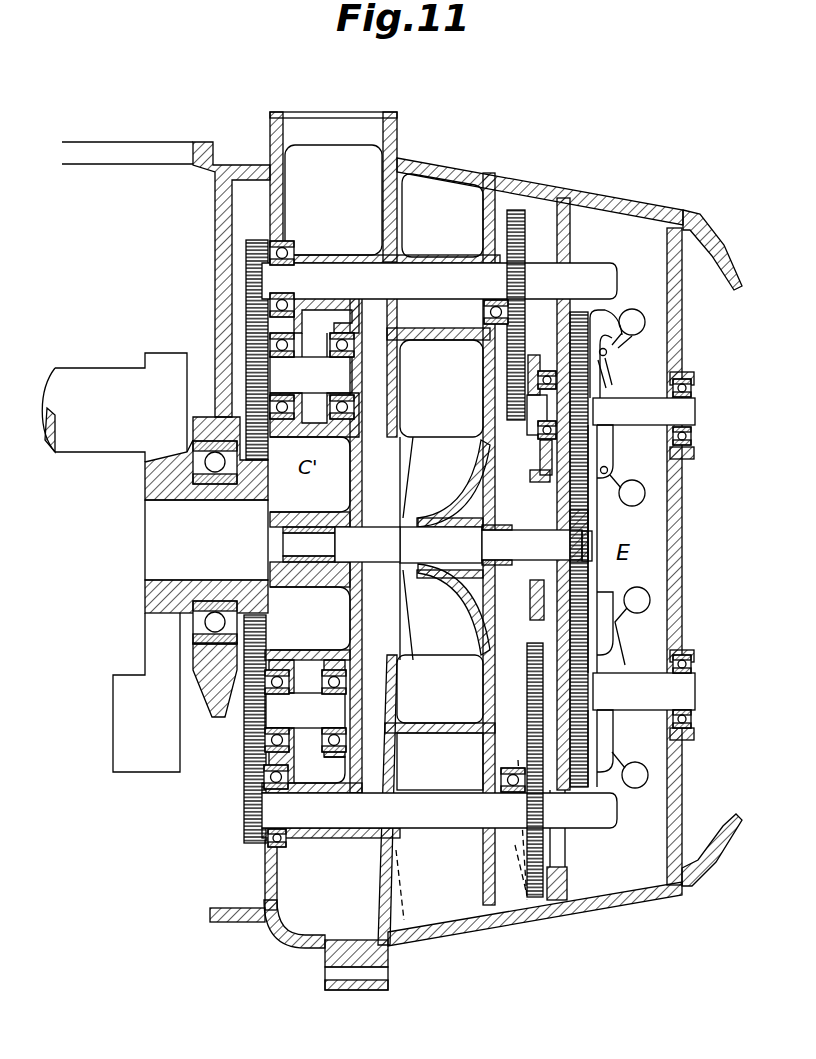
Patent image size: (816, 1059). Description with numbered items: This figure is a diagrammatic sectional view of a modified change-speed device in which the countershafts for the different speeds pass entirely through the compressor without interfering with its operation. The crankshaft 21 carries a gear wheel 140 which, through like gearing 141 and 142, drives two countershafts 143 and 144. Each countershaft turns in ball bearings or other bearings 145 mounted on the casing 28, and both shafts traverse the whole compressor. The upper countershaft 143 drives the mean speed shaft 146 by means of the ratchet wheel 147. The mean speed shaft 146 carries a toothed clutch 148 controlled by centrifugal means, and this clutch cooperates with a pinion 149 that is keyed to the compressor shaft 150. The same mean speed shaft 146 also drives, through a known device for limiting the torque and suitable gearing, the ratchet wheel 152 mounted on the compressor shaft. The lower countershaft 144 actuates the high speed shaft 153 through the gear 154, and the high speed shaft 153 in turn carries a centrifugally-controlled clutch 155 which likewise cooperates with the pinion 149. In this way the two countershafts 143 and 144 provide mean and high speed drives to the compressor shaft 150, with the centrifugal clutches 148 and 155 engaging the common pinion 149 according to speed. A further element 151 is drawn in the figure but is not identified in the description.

The crankshaft 21 is at (93, 433).
The casing 28 is at (600, 896).
The gear wheel 140 is at (255, 615).
The gearing 141 is at (257, 297).
The gearing 142 is at (243, 797).
The countershaft 143 is at (423, 277).
The countershaft 144 is at (442, 813).
The ball bearings 145 is at (292, 248).
The mean speed shaft 146 is at (645, 412).
The ratchet wheel 147 is at (507, 443).
The toothed clutch 148 is at (593, 387).
The pinion 149 is at (586, 522).
The compressor shaft 150 is at (452, 548).
The spring 151 is at (540, 472).
The ratchet wheel 152 is at (437, 545).
The high speed shaft 153 is at (657, 700).
The gear 154 is at (528, 750).
The centrifugally-controlled clutch 155 is at (618, 667).